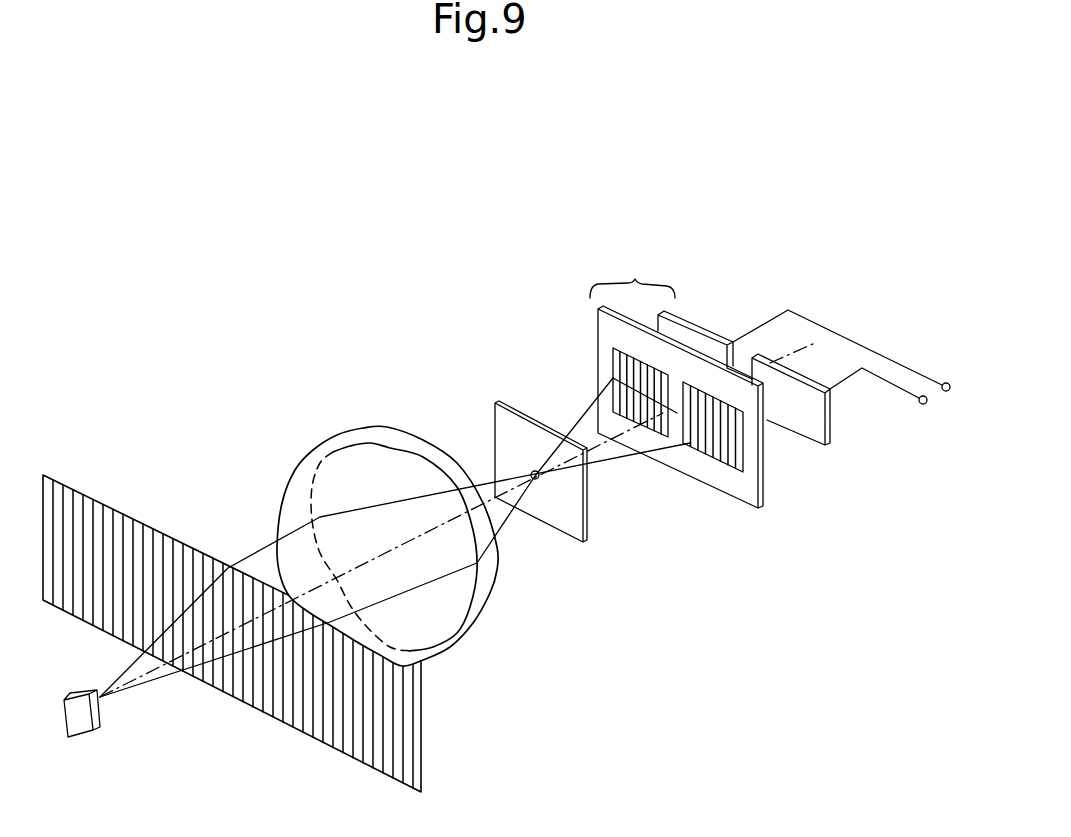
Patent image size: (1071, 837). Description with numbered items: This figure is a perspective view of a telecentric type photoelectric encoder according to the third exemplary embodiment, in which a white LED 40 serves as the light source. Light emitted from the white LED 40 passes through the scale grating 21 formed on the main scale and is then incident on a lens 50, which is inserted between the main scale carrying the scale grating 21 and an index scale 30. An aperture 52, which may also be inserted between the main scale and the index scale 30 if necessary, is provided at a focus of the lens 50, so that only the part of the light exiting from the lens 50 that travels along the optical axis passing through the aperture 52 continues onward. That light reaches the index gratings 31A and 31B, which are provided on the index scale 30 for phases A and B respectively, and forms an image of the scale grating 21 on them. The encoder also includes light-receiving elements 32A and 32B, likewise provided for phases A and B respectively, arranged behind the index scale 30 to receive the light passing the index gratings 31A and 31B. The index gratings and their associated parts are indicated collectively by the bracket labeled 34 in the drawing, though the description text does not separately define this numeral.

The scale grating 21 is at (425, 745).
The white LED 40 is at (78, 724).
The lens 50 is at (482, 596).
The aperture 52 is at (546, 484).
The index scale 30 is at (742, 504).
The index grating 31A is at (700, 453).
The index grating 31B is at (613, 348).
The light-receiving element 32A is at (815, 442).
The light-receiving element 32B is at (708, 327).
The detector unit 34 is at (632, 274).